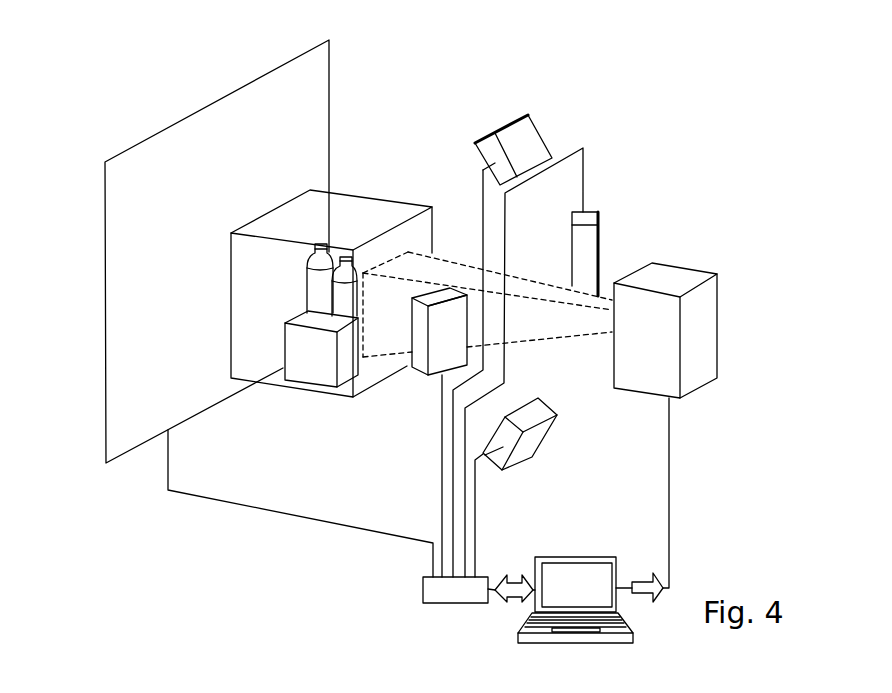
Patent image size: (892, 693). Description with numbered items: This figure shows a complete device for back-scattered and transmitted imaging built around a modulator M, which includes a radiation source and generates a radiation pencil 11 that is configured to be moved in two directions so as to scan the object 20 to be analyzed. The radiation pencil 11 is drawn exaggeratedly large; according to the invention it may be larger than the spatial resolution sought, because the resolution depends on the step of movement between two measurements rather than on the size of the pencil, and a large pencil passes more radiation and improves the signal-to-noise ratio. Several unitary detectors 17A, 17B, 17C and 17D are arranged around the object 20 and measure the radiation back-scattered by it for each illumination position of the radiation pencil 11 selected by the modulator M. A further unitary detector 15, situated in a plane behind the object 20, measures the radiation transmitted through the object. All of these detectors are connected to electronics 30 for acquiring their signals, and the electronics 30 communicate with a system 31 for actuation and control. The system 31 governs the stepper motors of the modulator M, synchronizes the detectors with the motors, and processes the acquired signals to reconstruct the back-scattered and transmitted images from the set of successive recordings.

The unitary detector 15 is at (192, 417).
The object 20 is at (359, 210).
The radiation pencil 11 is at (558, 278).
The unitary detector 17A is at (416, 395).
The unitary detector 17B is at (535, 468).
The unitary detector 17C is at (517, 137).
The unitary detector 17D is at (616, 195).
The modulator M is at (674, 261).
The electronics 30 is at (413, 592).
The system for actuation and control 31 is at (596, 573).